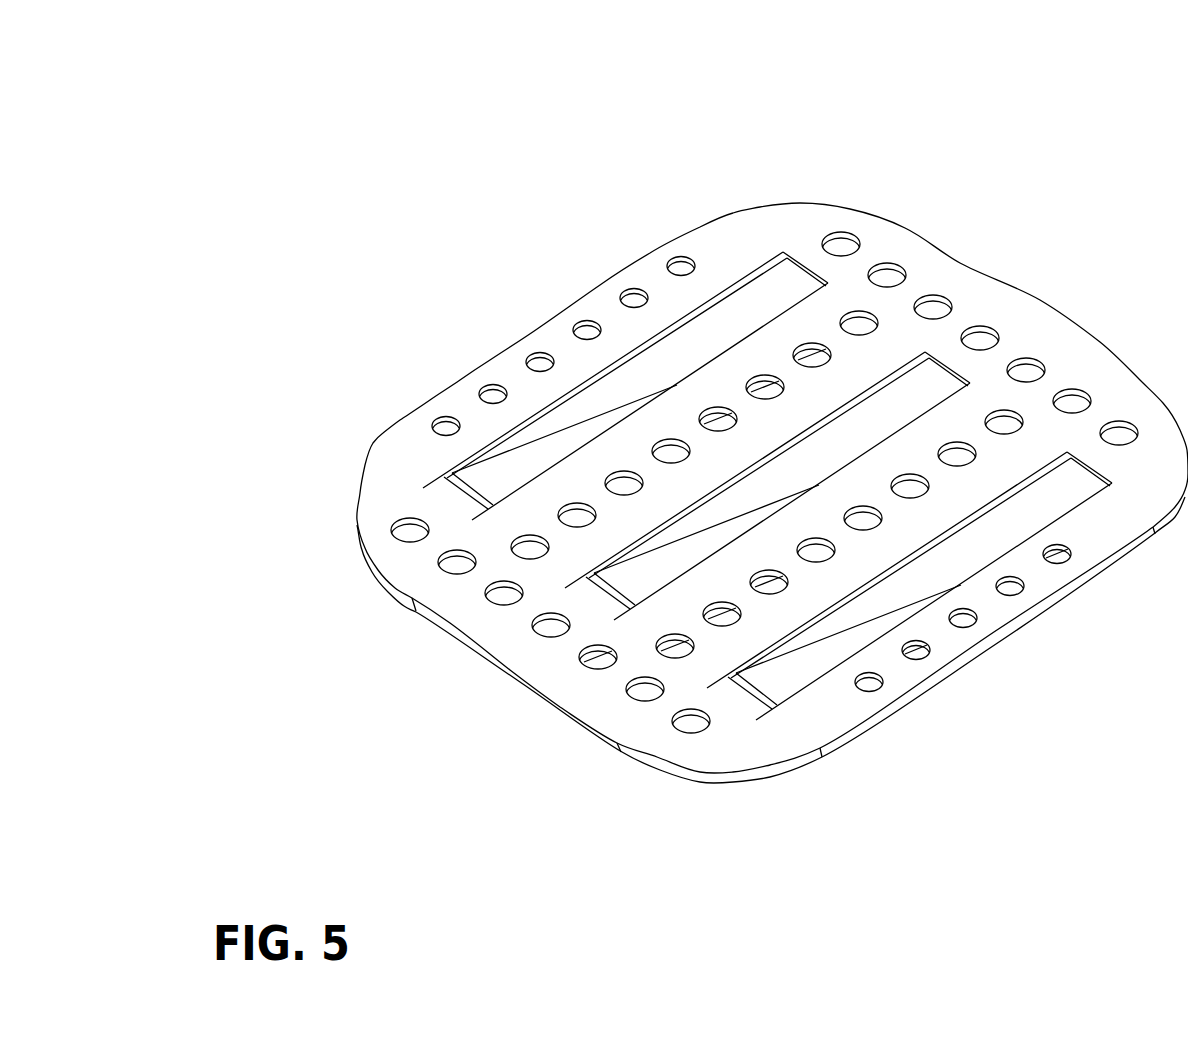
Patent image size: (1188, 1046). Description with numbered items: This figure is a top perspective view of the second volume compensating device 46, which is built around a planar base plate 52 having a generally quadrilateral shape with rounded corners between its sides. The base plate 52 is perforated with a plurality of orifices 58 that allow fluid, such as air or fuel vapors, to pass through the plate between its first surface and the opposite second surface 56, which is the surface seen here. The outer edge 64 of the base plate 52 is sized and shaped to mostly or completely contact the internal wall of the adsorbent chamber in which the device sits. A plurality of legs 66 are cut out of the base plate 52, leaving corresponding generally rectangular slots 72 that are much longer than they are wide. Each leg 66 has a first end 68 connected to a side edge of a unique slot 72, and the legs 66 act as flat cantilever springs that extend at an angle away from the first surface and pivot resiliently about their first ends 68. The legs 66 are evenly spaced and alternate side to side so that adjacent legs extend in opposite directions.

The second volume compensating device 46 is at (927, 150).
The base plate 52 is at (1097, 341).
The second surface 56 is at (941, 278).
The orifices 58 is at (402, 534).
The outer edge 64 is at (748, 205).
The legs 66 is at (573, 420).
The first end 68 is at (458, 480).
The slots 72 is at (643, 366).